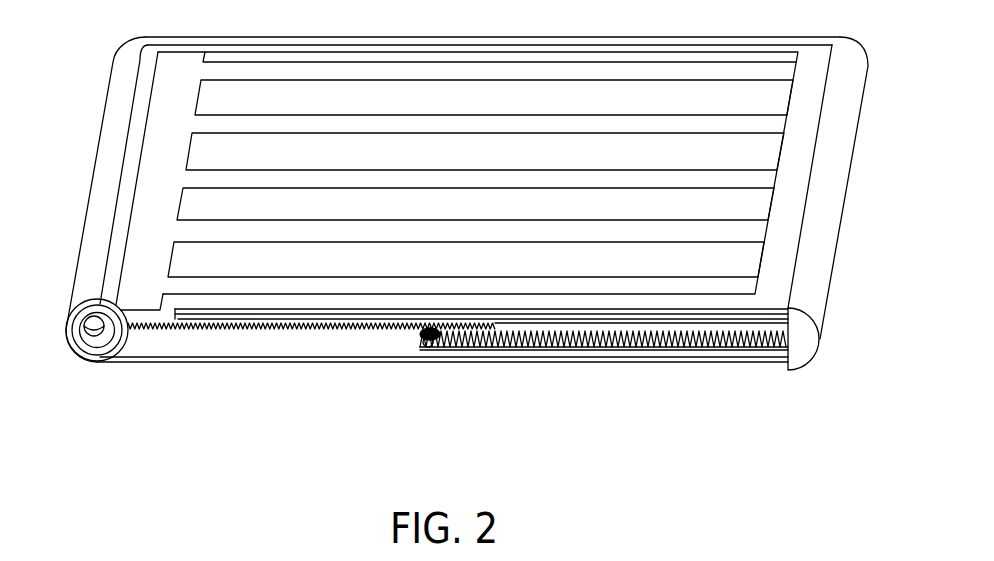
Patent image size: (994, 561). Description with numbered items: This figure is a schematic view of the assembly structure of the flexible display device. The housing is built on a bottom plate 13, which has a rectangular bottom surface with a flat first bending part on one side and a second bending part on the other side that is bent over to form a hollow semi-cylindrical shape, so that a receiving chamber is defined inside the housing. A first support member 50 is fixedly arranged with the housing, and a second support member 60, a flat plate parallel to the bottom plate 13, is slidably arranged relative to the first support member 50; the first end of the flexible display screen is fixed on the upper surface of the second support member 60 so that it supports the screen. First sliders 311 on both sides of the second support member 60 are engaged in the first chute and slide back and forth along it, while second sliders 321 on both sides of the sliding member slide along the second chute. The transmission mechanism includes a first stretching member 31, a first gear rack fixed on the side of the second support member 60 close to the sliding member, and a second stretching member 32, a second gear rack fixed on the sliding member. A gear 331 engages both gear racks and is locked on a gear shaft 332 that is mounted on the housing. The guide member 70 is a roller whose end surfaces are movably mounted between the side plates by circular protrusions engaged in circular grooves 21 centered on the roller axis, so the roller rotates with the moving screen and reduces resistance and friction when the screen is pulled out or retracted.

The bottom plate 13 is at (285, 343).
The circular groove 21 is at (94, 333).
The first stretching member 31 is at (458, 355).
The first slider 311 is at (208, 328).
The second stretching member 32 is at (604, 367).
The second slider 321 is at (618, 350).
The gear 331 is at (420, 337).
The gear shaft 332 is at (429, 347).
The first support member 50 is at (172, 120).
The second support member 60 is at (792, 202).
The guide member 70 is at (123, 200).